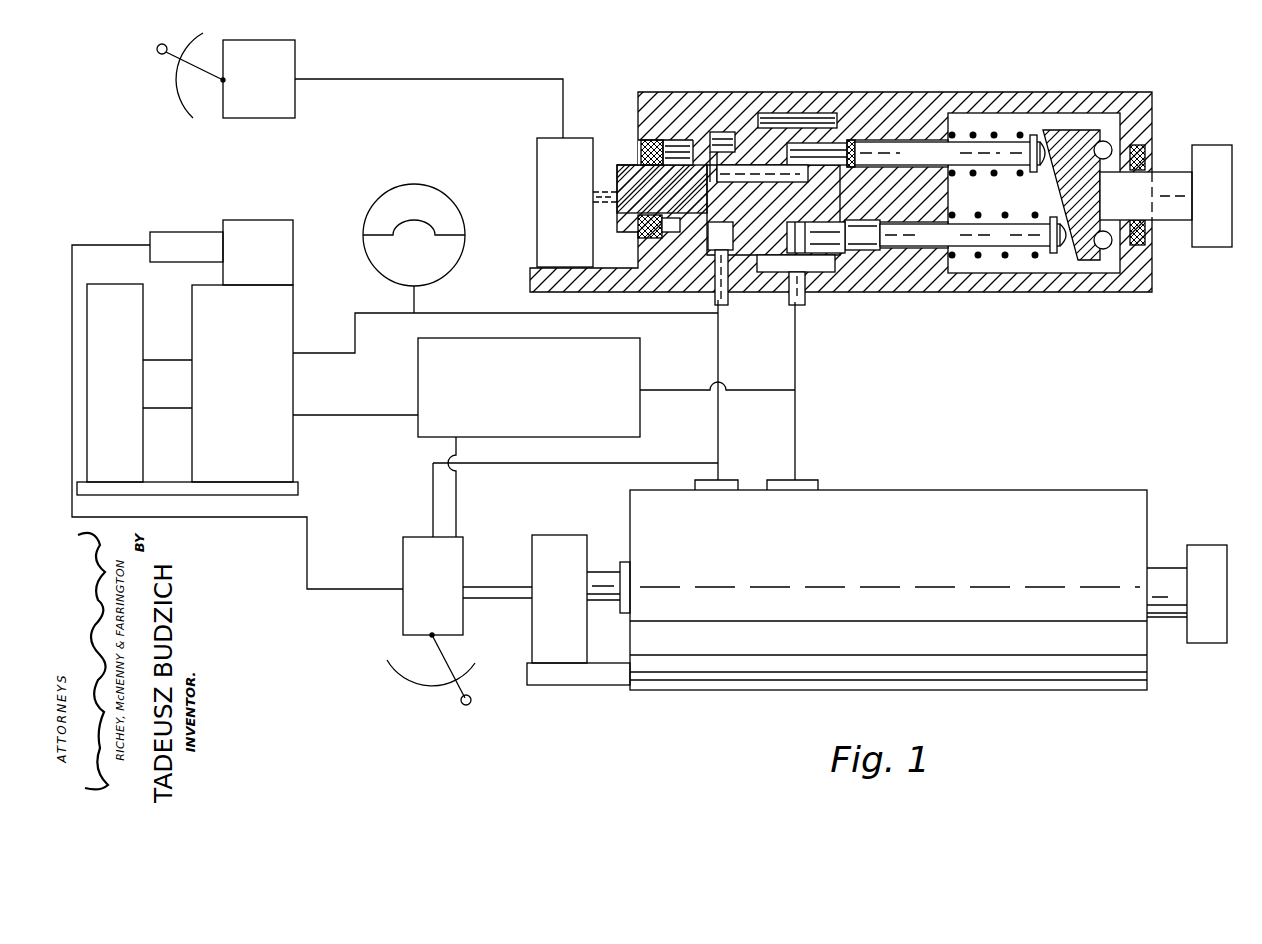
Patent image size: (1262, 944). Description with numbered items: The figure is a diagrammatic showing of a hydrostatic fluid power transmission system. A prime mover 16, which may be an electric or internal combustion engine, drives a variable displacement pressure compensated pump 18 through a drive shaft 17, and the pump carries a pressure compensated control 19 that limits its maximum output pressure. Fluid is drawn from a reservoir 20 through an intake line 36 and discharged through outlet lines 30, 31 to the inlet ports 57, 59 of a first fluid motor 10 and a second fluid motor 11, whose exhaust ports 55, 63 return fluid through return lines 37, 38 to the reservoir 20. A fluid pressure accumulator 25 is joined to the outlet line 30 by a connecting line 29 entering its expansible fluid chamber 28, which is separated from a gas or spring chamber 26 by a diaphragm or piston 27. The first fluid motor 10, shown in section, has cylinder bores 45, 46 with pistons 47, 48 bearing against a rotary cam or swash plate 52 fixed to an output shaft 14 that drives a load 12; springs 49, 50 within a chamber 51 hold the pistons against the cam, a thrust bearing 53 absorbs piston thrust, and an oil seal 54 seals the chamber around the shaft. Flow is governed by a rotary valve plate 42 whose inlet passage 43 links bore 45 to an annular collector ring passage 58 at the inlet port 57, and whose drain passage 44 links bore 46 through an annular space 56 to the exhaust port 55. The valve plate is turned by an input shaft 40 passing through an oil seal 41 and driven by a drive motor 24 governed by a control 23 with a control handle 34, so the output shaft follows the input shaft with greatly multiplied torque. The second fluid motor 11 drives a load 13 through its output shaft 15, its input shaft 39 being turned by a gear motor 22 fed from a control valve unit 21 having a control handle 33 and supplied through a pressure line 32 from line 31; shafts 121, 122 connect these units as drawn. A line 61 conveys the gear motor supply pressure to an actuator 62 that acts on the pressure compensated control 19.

The first fluid motor 10 is at (908, 94).
The second fluid motor 11 is at (952, 490).
The load 12 is at (1204, 195).
The load 13 is at (1199, 593).
The output shaft 14 is at (1168, 172).
The output shaft 15 is at (1167, 572).
The prime mover 16 is at (105, 389).
The drive shaft 17 is at (172, 360).
The variable displacement pressure compensated pump 18 is at (234, 389).
The pressure compensated control 19 is at (250, 258).
The reservoir 20 is at (513, 404).
The control valve unit 21 is at (417, 591).
The gear motor 22 is at (549, 592).
The control 23 is at (250, 88).
The drive motor 24 is at (551, 217).
The fluid pressure accumulator 25 is at (444, 197).
The gas or spring chamber 26 is at (402, 210).
The diaphragm or piston 27 is at (462, 230).
The expansible fluid chamber 28 is at (402, 265).
The connecting line 29 is at (420, 297).
The outlet line 30 is at (502, 314).
The outlet line 31 is at (720, 428).
The pressure line 32 is at (504, 464).
The control handle 33 is at (436, 678).
The control handle 34 is at (164, 45).
The intake line 36 is at (364, 415).
The return line 37 is at (666, 390).
The return line 38 is at (797, 436).
The input shaft 39 is at (606, 572).
The input shaft 40 is at (603, 205).
The oil seal 41 is at (640, 153).
The rotary valve plate 42 is at (747, 217).
The inlet passage 43 is at (712, 178).
The exhaust or drain passage 44 is at (818, 226).
The cylinder bore 45 is at (853, 138).
The cylinder bore 46 is at (860, 246).
The piston 47 is at (935, 161).
The piston 48 is at (935, 243).
The spring 49 is at (1012, 262).
The spring 50 is at (972, 130).
The chamber 51 is at (978, 260).
The rotary cam or swash plate 52 is at (1066, 160).
The thrust bearing 53 is at (1106, 140).
The oil seal 54 is at (1148, 240).
The drain or exhaust port 55 is at (802, 294).
The annular space 56 is at (815, 122).
The inlet port 57 is at (724, 294).
The annular collector ring passage 58 is at (724, 130).
The inlet port 59 is at (716, 494).
The line 61 is at (330, 590).
The actuator 62 is at (185, 240).
The drain or exhaust port 63 is at (792, 494).
The shaft 121 is at (498, 584).
The shaft 122 is at (501, 600).